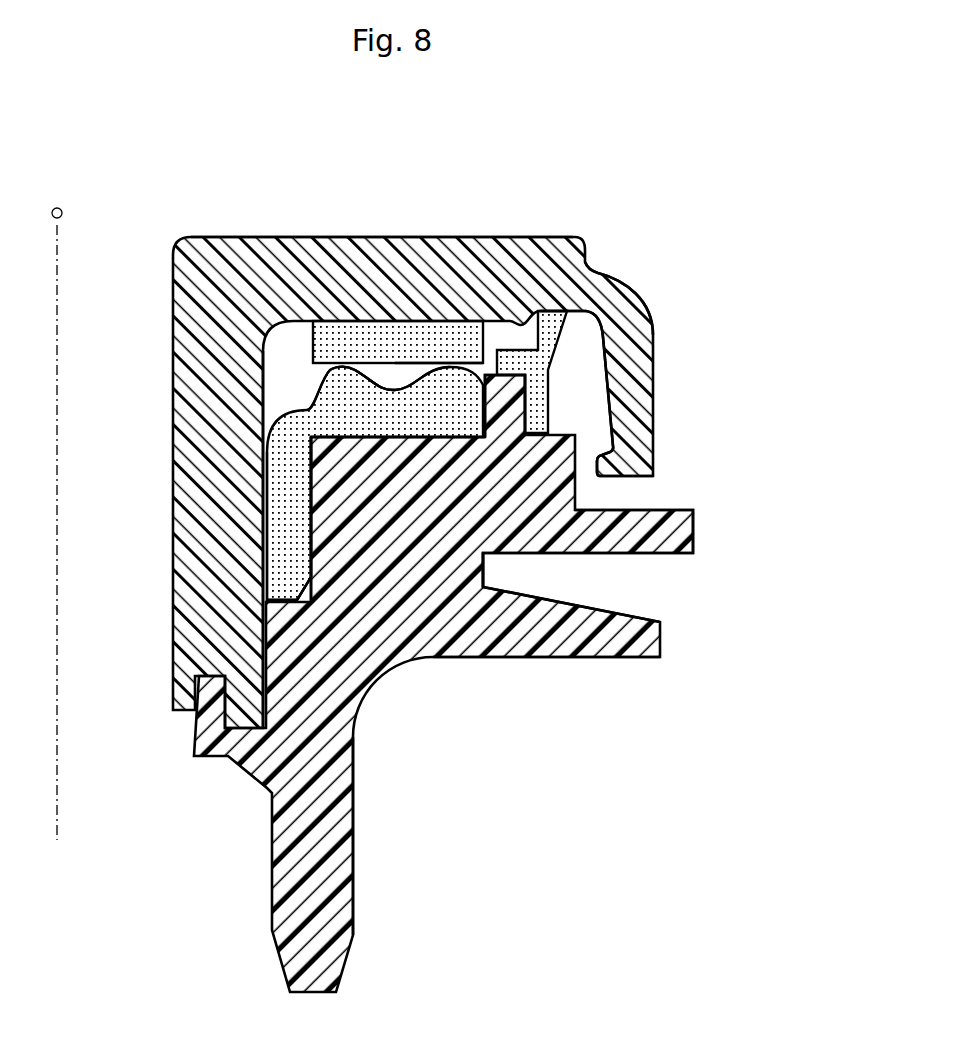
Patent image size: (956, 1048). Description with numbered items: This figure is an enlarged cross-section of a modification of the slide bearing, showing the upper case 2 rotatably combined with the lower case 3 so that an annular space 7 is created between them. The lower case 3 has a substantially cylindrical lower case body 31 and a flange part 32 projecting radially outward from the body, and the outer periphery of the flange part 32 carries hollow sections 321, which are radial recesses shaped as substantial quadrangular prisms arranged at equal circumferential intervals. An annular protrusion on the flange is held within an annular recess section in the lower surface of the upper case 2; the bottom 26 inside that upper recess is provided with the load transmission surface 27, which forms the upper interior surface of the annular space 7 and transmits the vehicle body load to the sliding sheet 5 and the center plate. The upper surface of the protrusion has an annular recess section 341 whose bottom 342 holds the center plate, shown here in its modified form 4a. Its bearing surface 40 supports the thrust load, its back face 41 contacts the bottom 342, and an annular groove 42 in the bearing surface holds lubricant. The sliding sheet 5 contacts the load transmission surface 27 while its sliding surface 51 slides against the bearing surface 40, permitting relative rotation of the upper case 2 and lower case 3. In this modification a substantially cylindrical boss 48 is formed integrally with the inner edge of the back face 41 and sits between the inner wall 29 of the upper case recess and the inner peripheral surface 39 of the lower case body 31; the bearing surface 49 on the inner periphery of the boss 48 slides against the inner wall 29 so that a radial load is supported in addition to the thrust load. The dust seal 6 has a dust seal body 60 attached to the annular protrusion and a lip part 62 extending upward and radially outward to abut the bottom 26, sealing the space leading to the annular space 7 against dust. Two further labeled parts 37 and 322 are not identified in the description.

The upper case 2 is at (392, 237).
The lower case 3 is at (347, 952).
The modification of the center plate 4a is at (345, 392).
The sliding sheet 5 is at (347, 388).
The dust seal 6 is at (549, 391).
The annular space 7 is at (516, 343).
The bottom 26 is at (542, 348).
The load transmission surface 27 is at (431, 360).
The inner wall 29 is at (310, 490).
The lower case body 31 is at (353, 857).
The flange part 32 is at (693, 523).
The underside surface 37 is at (493, 660).
The inner peripheral surface 39 is at (305, 465).
The bearing surface 40 is at (485, 380).
The back face 41 is at (398, 445).
The annular groove 42 is at (398, 368).
The boss 48 is at (307, 550).
The bearing surface 49 is at (285, 565).
The sliding surface 51 is at (505, 553).
The dust seal body 60 is at (549, 417).
The lip part 62 is at (593, 268).
The hollow sections 321 is at (660, 576).
The groove inclined surface 322 is at (640, 604).
The annular recess section 341 is at (315, 321).
The bottom 342 is at (310, 397).